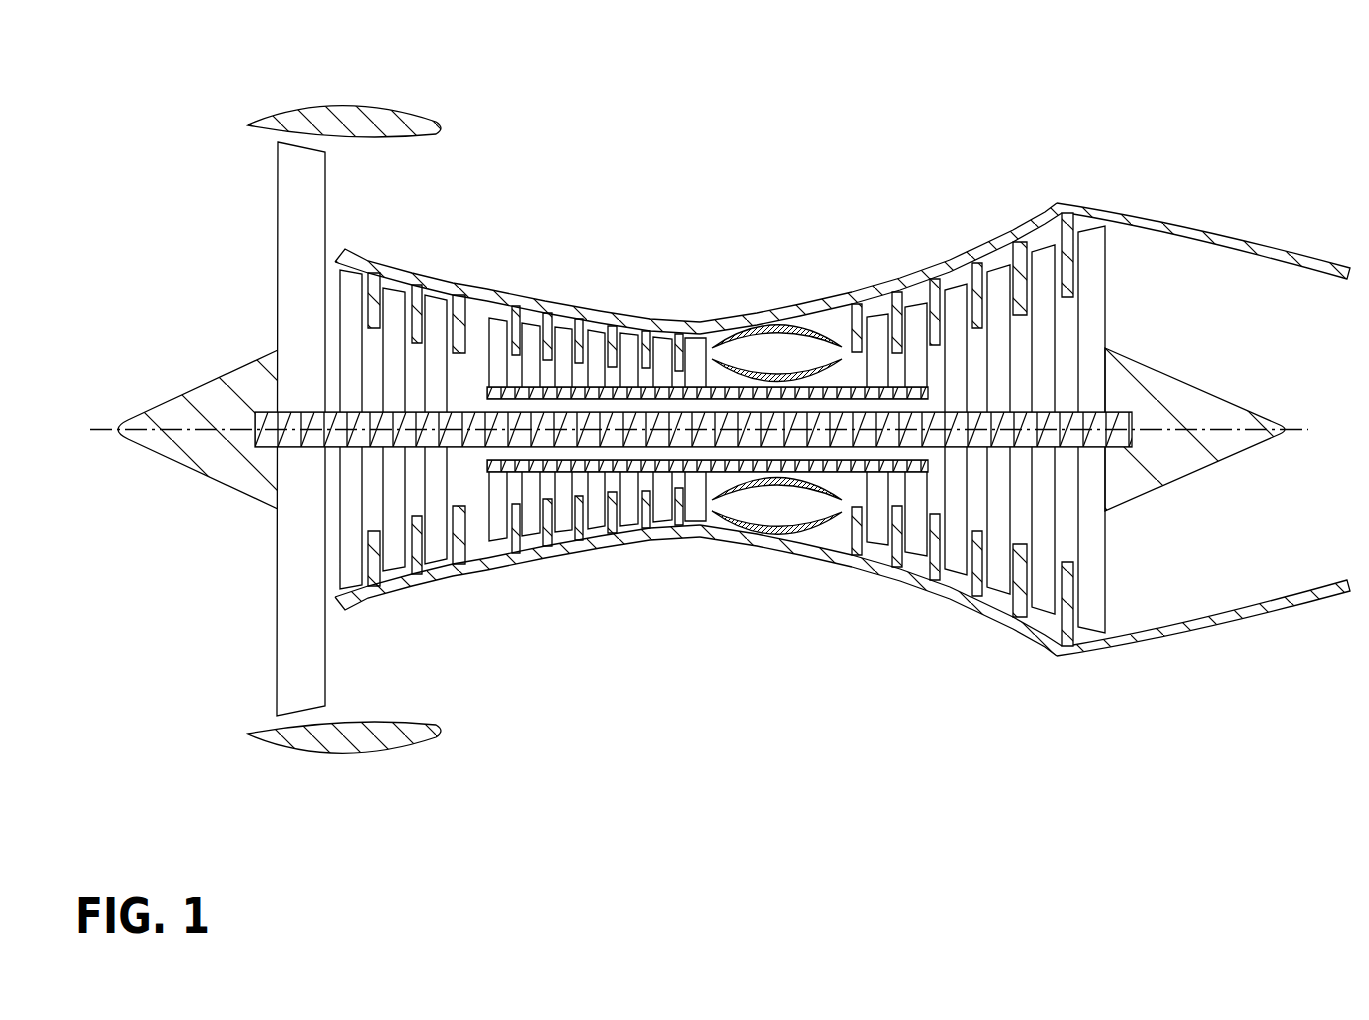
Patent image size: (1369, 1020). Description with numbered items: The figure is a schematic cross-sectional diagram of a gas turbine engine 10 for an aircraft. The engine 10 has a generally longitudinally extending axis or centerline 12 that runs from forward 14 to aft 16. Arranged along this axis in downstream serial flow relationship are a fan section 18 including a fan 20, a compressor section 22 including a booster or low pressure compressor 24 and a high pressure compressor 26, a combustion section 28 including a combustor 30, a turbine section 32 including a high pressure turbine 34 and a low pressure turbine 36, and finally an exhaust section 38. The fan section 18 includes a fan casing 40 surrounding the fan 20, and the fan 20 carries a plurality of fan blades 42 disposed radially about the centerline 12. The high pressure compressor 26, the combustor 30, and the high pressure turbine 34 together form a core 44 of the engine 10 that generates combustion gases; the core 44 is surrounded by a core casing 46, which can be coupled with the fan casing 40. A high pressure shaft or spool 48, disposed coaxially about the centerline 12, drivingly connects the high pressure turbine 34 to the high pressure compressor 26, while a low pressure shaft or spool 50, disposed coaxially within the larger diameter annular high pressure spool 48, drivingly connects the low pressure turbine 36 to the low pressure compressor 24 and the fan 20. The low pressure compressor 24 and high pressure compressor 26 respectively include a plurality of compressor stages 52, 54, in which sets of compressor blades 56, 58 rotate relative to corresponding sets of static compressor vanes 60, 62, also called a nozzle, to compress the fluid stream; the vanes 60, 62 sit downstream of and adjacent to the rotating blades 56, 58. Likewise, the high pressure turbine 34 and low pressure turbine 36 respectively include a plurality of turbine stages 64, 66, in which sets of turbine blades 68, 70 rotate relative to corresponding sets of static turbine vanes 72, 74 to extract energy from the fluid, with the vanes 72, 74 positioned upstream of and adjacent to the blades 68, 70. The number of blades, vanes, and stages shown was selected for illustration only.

The gas turbine engine 10 is at (700, 427).
The centerline 12 is at (172, 428).
The forward 14 is at (75, 430).
The aft 16 is at (1322, 430).
The fan section 18 is at (328, 790).
The fan 20 is at (254, 429).
The compressor section 22 is at (333, 790).
The low pressure compressor 24 is at (436, 389).
The high pressure compressor 26 is at (596, 400).
The combustion section 28 is at (865, 790).
The combustor 30 is at (830, 330).
The turbine section 32 is at (1095, 790).
The high pressure turbine 34 is at (893, 396).
The low pressure turbine 36 is at (1025, 396).
The exhaust section 38 is at (1345, 790).
The fan casing 40 is at (347, 106).
The fan blades 42 is at (288, 657).
The core 44 is at (706, 461).
The core casing 46 is at (742, 320).
The HP shaft or spool 48 is at (706, 386).
The LP shaft or spool 50 is at (468, 412).
The compressor stages 52 is at (337, 237).
The compressor stages 54 is at (498, 280).
The compressor blades 56 is at (376, 288).
The compressor blades 58 is at (516, 322).
The static compressor vanes 60 is at (374, 312).
The static compressor vanes 62 is at (512, 330).
The turbine stages 64 is at (880, 277).
The turbine stages 66 is at (1020, 216).
The turbine blades 68 is at (900, 318).
The turbine blades 70 is at (1040, 268).
The static turbine vanes 72 is at (897, 304).
The static turbine vanes 74 is at (1022, 243).